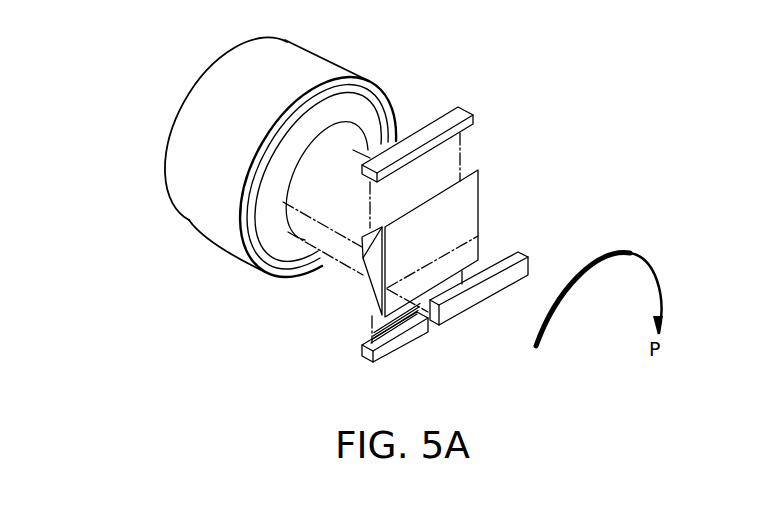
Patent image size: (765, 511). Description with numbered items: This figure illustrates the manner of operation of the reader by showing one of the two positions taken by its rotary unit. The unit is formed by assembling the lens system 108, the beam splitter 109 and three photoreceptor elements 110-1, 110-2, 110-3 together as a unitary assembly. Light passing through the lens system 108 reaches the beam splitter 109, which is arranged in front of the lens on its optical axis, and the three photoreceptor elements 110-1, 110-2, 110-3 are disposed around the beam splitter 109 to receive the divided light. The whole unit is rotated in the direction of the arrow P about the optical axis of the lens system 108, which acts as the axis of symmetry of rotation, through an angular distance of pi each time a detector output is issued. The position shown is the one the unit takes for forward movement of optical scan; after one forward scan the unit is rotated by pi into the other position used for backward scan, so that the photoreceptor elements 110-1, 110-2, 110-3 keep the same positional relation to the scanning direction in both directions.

The lens system 108 is at (324, 62).
The beam splitter 109 is at (479, 199).
The first photoreceptor element 110-1 is at (452, 107).
The second photoreceptor element 110-2 is at (474, 300).
The third photoreceptor element 110-3 is at (404, 347).